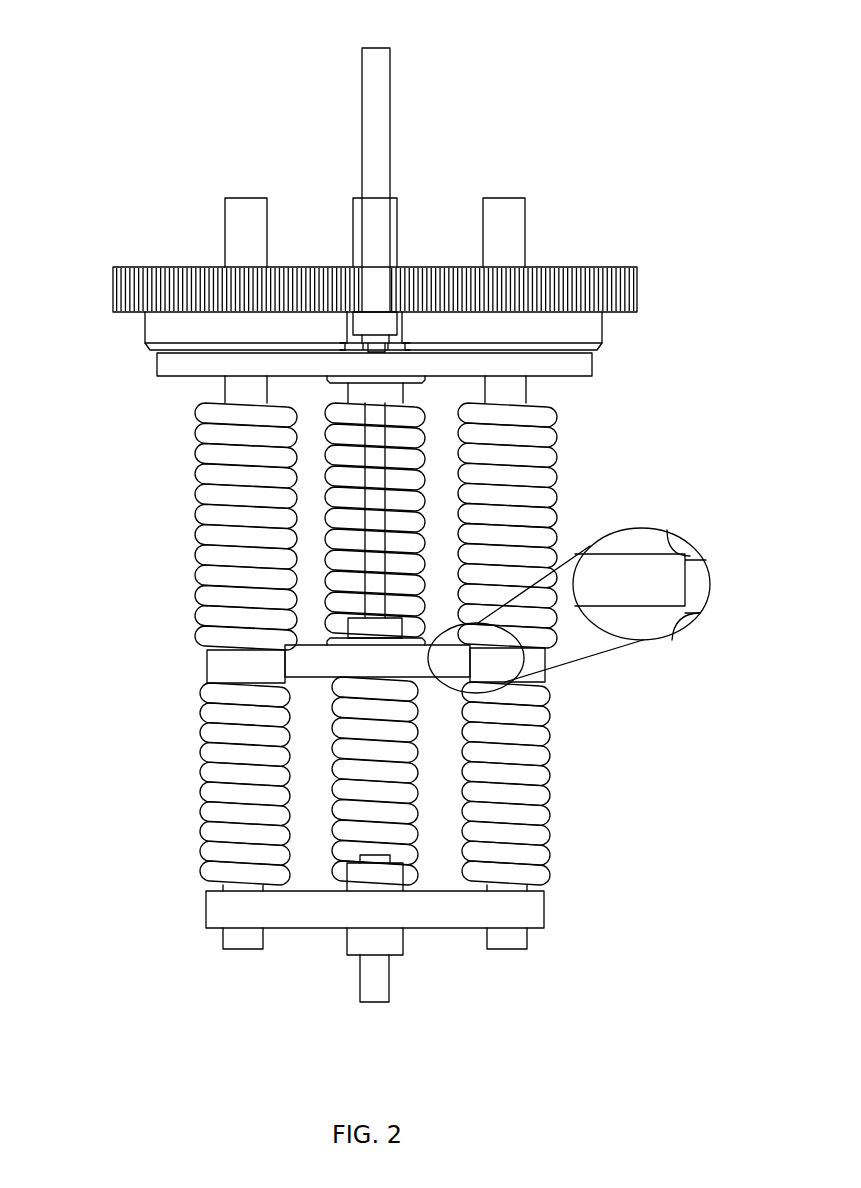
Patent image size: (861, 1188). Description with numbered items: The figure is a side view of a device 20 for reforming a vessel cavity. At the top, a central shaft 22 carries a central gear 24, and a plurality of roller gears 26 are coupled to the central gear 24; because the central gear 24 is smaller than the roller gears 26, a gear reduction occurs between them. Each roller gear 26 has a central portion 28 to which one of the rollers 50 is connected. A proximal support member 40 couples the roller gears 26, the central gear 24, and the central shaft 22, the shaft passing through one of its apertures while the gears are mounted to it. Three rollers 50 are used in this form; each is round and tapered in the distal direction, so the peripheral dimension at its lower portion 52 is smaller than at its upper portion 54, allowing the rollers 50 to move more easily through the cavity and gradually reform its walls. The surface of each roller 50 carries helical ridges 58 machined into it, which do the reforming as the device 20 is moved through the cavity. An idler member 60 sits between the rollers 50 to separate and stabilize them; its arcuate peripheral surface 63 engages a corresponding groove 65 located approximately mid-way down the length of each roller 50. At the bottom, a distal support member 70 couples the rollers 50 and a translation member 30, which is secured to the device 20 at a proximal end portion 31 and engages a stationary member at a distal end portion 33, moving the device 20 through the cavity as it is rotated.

The device for reforming a vessel cavity 20 is at (540, 62).
The central shaft 22 is at (367, 68).
The central gear 24 is at (374, 325).
The roller gears 26 is at (133, 268).
The central portion 28 is at (208, 324).
The translation member 30 is at (375, 990).
The proximal end portion 31 is at (355, 607).
The distal end portion 33 is at (405, 945).
The proximal support member 40 is at (183, 368).
The rollers 50 is at (225, 438).
The lower portion 52 is at (362, 781).
The upper portion 54 is at (409, 514).
The helical ridges 58 is at (535, 808).
The idler member 60 is at (345, 655).
The peripheral surface 63 is at (680, 575).
The groove 65 is at (238, 665).
The distal support member 70 is at (240, 915).